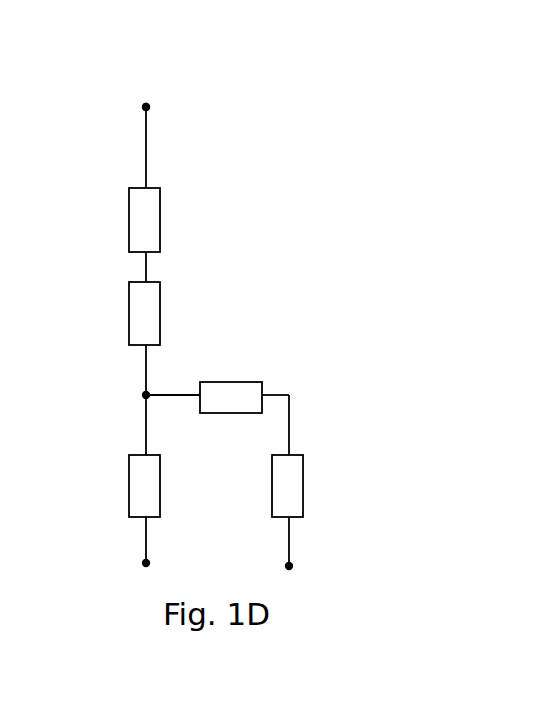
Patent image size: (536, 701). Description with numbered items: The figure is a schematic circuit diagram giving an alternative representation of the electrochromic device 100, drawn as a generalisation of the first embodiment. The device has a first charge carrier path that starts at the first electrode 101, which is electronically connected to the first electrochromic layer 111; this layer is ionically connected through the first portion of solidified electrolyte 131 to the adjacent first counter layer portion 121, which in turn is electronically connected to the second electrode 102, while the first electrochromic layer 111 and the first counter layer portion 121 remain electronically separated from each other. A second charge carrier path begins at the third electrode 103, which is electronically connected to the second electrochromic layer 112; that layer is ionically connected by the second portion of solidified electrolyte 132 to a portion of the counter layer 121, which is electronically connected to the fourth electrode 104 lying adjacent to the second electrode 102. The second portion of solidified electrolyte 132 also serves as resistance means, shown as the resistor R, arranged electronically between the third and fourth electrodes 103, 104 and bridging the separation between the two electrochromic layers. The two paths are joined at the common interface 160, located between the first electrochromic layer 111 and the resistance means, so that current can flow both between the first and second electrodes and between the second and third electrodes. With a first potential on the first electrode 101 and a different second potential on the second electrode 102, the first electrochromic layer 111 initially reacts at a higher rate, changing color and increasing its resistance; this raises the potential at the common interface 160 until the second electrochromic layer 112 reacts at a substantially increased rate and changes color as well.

The electrochromic device 100 is at (246, 153).
The second electrode 102 is at (145, 106).
The fourth electrode 104 is at (146, 107).
The first counter layer portion 121 is at (140, 203).
The first portion of solidified electrolyte 131 is at (138, 295).
The common interface 160 is at (145, 394).
The second portion of solidified electrolyte 132 is at (252, 388).
The first electrochromic layer 111 is at (140, 463).
The second electrochromic layer 112 is at (292, 467).
The first electrode 101 is at (143, 560).
The third electrode 103 is at (290, 562).